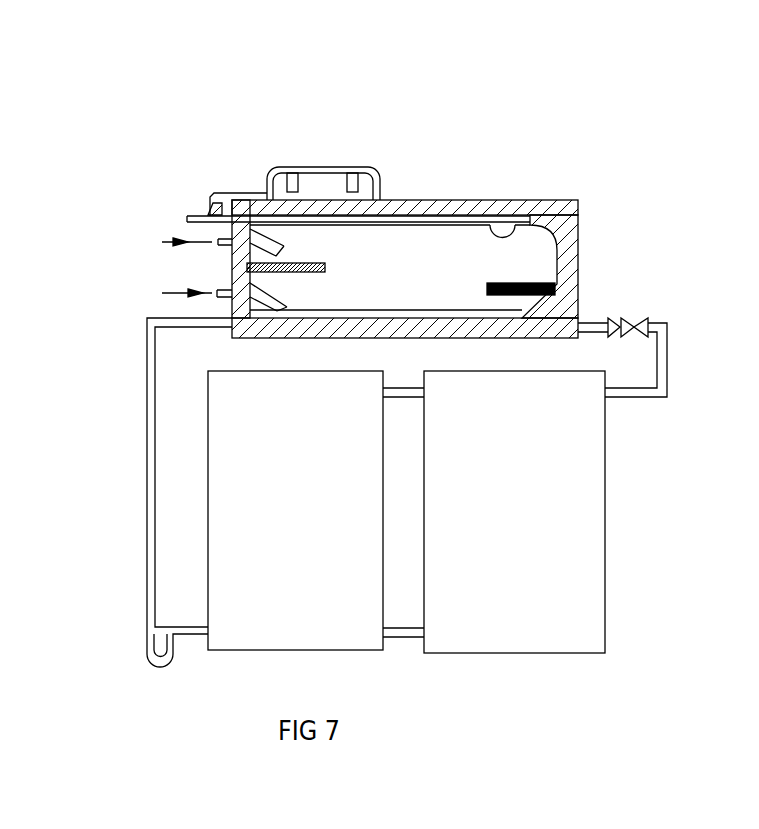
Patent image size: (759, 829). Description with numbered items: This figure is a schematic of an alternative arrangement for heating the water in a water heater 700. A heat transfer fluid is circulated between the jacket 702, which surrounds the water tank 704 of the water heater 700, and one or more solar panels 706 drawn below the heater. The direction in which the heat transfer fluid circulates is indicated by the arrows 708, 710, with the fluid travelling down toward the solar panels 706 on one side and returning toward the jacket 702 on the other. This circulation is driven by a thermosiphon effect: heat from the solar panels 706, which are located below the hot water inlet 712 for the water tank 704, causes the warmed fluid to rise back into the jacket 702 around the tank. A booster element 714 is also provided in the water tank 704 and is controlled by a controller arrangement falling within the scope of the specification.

The water heater 700 is at (393, 194).
The jacket 702 is at (447, 220).
The water tank 704 is at (523, 220).
The solar panel 706 is at (406, 512).
The arrow 708 is at (121, 377).
The arrow 710 is at (683, 355).
The hot water inlet 712 is at (583, 332).
The booster element 714 is at (532, 284).